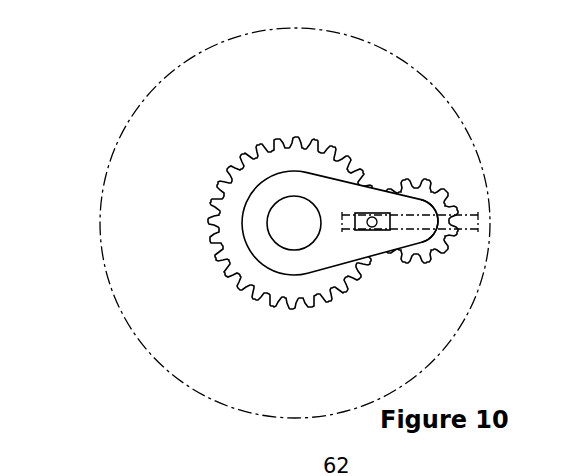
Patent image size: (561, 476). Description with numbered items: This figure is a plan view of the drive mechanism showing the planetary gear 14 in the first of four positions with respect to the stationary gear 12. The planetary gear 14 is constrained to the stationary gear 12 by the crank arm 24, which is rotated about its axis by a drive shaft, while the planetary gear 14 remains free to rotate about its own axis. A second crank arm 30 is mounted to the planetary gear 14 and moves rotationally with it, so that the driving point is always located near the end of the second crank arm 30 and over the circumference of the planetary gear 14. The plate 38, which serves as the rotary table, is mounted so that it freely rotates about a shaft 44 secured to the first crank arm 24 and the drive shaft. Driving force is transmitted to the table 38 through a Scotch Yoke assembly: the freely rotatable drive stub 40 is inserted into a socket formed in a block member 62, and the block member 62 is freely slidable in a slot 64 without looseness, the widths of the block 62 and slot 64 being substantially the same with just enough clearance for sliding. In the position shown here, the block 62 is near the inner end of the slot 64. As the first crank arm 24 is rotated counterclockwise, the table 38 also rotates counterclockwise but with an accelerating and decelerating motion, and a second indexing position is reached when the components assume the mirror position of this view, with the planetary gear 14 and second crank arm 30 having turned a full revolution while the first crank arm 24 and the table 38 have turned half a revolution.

The stationary gear 12 is at (302, 291).
The planetary gear 14 is at (444, 189).
The crank arm 24 is at (324, 188).
The second crank arm 30 is at (411, 226).
The plate 38 is at (435, 338).
The drive stub 40 is at (376, 228).
The shaft 44 is at (307, 234).
The block member 62 is at (367, 231).
The slot 64 is at (357, 212).